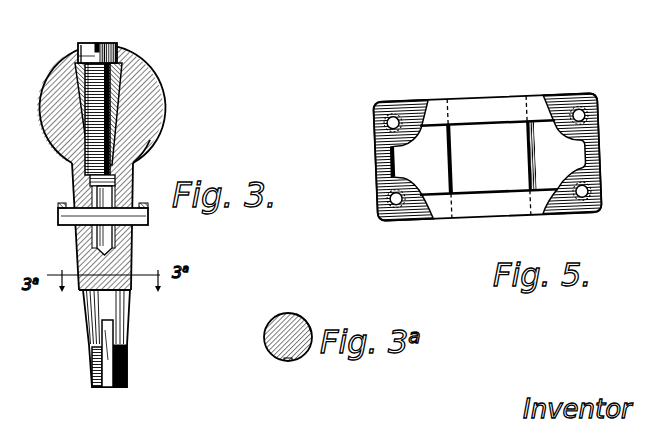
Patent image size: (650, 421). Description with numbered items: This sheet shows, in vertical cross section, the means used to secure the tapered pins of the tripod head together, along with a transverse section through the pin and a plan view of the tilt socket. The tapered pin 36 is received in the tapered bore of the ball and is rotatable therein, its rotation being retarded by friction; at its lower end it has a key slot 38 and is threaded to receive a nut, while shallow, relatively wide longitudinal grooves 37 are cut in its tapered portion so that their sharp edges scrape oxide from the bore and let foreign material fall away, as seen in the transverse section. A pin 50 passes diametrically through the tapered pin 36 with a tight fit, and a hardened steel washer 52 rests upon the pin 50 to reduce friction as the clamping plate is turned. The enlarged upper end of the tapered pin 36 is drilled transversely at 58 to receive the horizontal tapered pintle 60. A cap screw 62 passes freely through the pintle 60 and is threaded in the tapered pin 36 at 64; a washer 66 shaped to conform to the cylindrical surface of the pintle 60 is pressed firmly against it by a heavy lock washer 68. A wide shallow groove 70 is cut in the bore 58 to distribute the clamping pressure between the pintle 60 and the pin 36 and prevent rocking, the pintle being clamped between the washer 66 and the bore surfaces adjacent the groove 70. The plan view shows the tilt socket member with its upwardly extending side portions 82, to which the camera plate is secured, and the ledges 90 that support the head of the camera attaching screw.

In FIG. 3, the tapered pin 36 is at (133, 269).
In FIG. 3A, the tapered pin 36 is at (285, 334).
In FIG. 3, the grooves 37 is at (90, 313).
In FIG. 3A, the grooves 37 is at (307, 322).
In FIG. 3, the key slot 38 is at (108, 328).
In FIG. 3, the pin 50 is at (63, 227).
In FIG. 3, the hardened steel washer 52 is at (61, 204).
In FIG. 3, the transverse bore 58 is at (128, 100).
In FIG. 3, the horizontal tapered pintle 60 is at (118, 97).
In FIG. 3, the cap screw 62 is at (101, 43).
In FIG. 3, the threaded portion 64 is at (132, 172).
In FIG. 3, the washer 66 is at (78, 82).
In FIG. 3, the lock washer 68 is at (73, 58).
In FIG. 3, the groove 70 is at (156, 138).
In FIG. 5, the side portions 82 is at (409, 106).
In FIG. 5, the ledges 90 is at (476, 110).